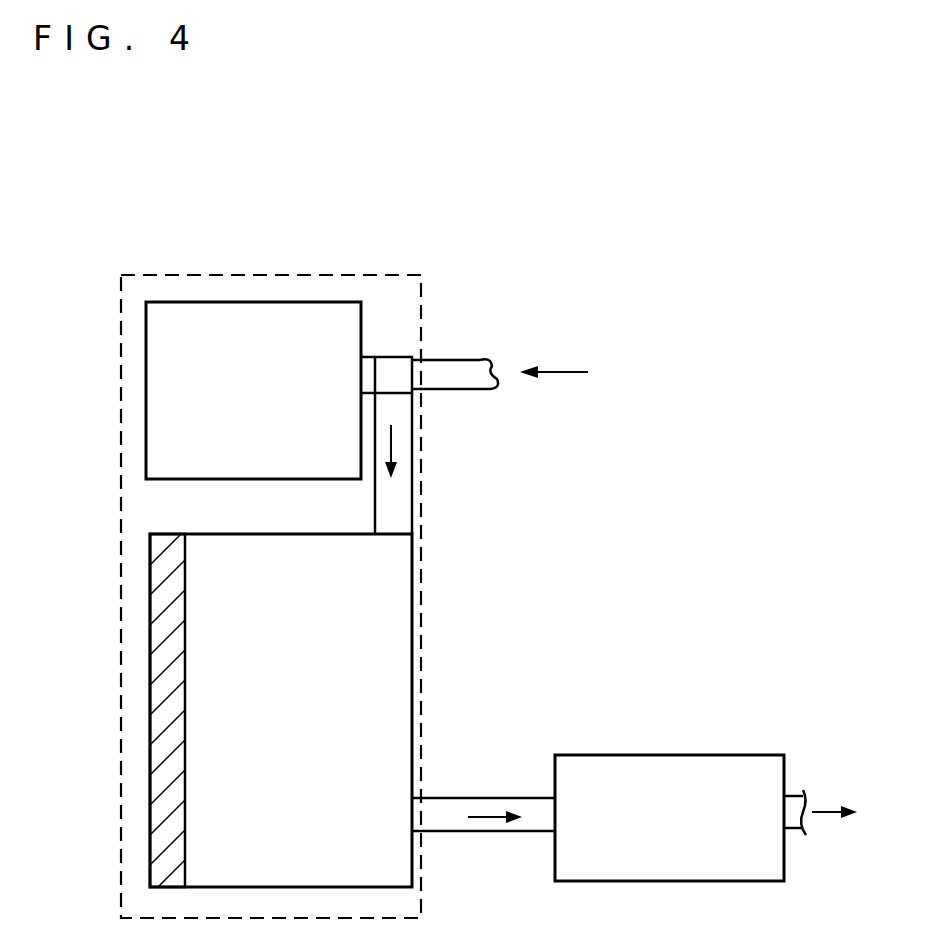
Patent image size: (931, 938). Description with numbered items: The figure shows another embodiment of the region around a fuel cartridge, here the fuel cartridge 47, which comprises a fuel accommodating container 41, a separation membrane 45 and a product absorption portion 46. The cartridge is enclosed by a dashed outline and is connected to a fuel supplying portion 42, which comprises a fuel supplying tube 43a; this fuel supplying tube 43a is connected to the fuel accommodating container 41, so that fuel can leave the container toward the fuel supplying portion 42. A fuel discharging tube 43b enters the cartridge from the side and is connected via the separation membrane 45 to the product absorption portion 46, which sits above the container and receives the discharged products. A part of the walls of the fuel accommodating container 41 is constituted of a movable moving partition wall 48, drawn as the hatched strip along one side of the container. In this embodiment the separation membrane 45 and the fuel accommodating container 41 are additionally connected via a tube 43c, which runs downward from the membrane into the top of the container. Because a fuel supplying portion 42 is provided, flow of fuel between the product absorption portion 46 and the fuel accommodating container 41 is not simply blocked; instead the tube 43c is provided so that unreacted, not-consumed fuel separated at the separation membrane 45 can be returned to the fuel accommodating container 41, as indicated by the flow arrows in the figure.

The fuel accommodating container 41 is at (281, 710).
The fuel supplying portion 42 is at (706, 818).
The fuel supplying tube 43a is at (458, 818).
The fuel discharging tube 43b is at (464, 373).
The tube 43c is at (403, 443).
The separation membrane 45 is at (398, 368).
The product absorption portion 46 is at (253, 390).
The fuel cartridge 47 is at (218, 274).
The moving partition wall 48 is at (150, 738).